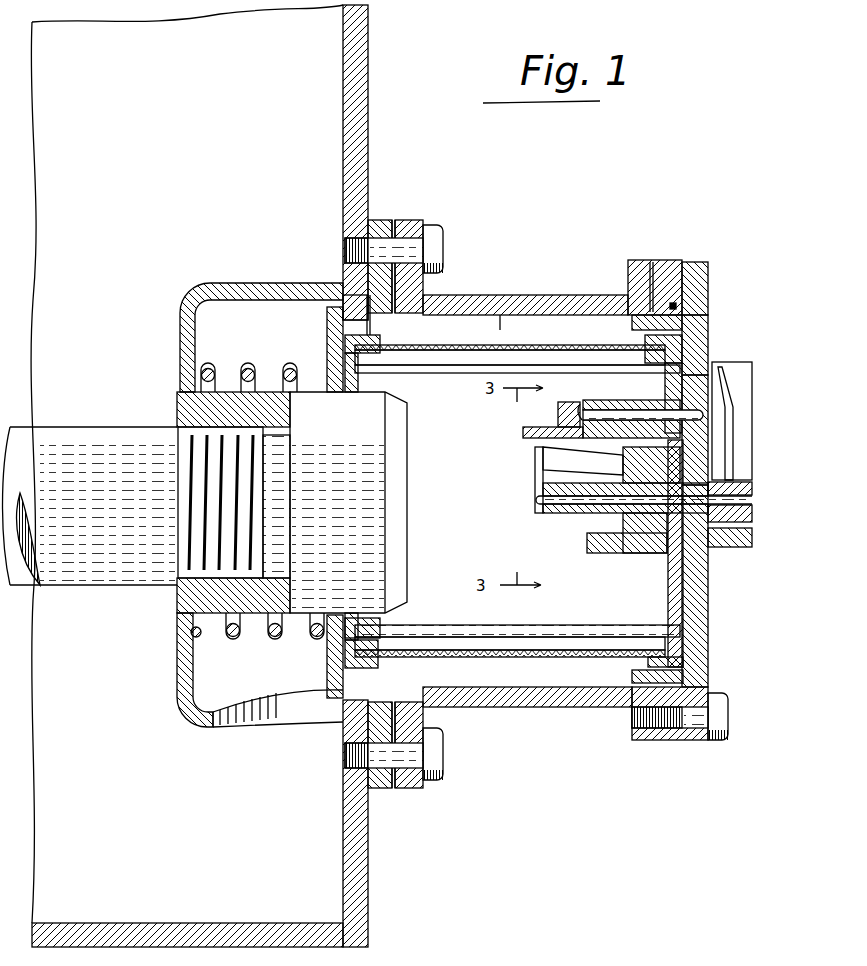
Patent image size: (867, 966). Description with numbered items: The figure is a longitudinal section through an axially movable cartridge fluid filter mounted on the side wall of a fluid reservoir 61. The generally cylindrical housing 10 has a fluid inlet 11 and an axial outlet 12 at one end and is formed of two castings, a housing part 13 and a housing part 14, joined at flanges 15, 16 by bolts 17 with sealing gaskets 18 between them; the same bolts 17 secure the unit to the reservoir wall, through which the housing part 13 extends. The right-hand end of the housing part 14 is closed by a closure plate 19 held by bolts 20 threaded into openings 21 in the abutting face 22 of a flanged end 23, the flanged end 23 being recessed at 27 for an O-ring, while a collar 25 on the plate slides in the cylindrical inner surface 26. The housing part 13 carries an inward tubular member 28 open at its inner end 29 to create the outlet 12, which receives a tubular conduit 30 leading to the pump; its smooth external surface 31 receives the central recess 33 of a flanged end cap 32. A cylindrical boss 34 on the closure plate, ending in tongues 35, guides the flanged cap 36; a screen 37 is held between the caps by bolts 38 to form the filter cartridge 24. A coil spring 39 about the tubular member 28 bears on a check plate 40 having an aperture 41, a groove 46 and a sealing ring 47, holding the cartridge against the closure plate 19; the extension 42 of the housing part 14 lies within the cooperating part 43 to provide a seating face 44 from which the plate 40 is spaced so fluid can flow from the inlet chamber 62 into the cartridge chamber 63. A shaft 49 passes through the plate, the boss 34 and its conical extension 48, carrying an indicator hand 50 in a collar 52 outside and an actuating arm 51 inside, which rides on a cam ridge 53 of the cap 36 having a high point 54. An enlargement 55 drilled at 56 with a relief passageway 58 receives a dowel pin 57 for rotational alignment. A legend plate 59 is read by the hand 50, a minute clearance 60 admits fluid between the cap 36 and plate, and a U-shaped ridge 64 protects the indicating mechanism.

The housing 10 is at (466, 296).
The fluid inlet 11 is at (278, 700).
The outlet 12 is at (175, 420).
The housing part 13 is at (268, 283).
The housing part 14 is at (540, 297).
The flange 15 is at (378, 220).
The flange 16 is at (415, 221).
The bolts 17 is at (435, 240).
The sealing gaskets 18 is at (394, 221).
The closure plate 19 is at (700, 304).
The bolts 20 is at (730, 717).
The threaded openings 21 is at (668, 741).
The abutting face 22 is at (690, 270).
The flanged end 23 is at (637, 259).
The filter cartridge 24 is at (517, 345).
The collar 25 is at (633, 318).
The cylindrical inner surface 26 is at (654, 270).
The recess 27 is at (676, 306).
The tubular member 28 is at (260, 615).
The inner end 29 is at (408, 455).
The tubular conduit 30 is at (62, 430).
The external surface 31 is at (256, 378).
The flanged end cap 32 is at (358, 358).
The central recess 33 is at (365, 385).
The cylindrical boss 34 is at (645, 558).
The tongues 35 is at (541, 467).
The flanged cap 36 is at (668, 596).
The filtering element 37 is at (465, 347).
The bolts 38 is at (456, 374).
The coil spring 39 is at (211, 363).
The check plate 40 is at (330, 332).
The aperture 41 is at (294, 378).
The extension 42 is at (383, 310).
The cooperating part 43 is at (372, 292).
The seating face 44 is at (362, 491).
The annular groove 46 is at (330, 632).
The sealing ring 47 is at (356, 627).
The conical extension 48 is at (563, 514).
The shaft 49 is at (752, 505).
The indicator hand 50 is at (728, 418).
The actuating arm 51 is at (533, 456).
The collar 52 is at (752, 488).
The cam ridge 53 is at (535, 428).
The high point 54 is at (552, 420).
The enlargement 55 is at (620, 404).
The drilled opening 56 is at (580, 405).
The dowel pin 57 is at (683, 434).
The passageway 58 is at (594, 406).
The legend plate 59 is at (710, 326).
The clearance 60 is at (692, 587).
The fluid reservoir 61 is at (368, 130).
The inlet chamber 62 is at (241, 300).
The cartridge chamber 63 is at (507, 313).
The ridge 64 is at (752, 368).